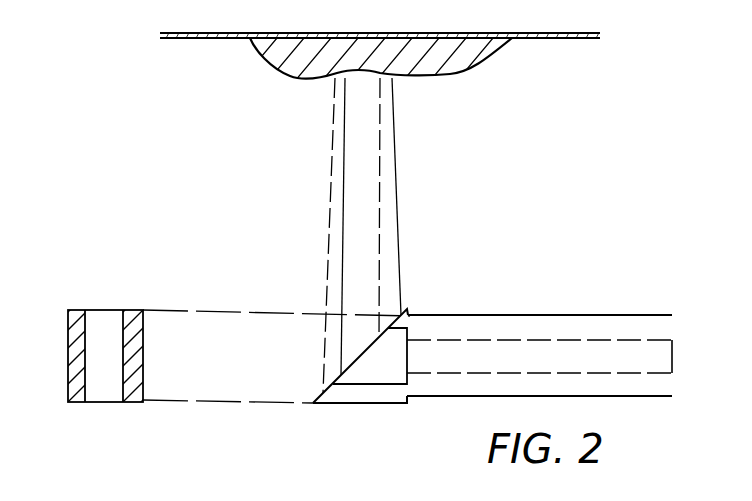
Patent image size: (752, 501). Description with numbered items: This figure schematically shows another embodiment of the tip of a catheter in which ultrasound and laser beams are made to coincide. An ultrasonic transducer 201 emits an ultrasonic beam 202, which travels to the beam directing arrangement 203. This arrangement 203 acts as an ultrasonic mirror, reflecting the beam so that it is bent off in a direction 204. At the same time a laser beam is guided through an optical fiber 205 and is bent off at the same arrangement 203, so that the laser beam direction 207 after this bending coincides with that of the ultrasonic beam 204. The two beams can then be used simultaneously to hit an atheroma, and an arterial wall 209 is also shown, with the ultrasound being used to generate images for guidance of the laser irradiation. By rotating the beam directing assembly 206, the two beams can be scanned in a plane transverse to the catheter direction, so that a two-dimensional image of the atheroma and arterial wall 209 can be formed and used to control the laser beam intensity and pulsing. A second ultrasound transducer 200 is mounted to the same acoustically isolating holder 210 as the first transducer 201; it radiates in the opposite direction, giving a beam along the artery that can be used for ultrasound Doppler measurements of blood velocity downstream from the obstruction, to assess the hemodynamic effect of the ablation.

The second ultrasound transducer 200 is at (104, 357).
The ultrasonic transducer 201 is at (138, 310).
The ultrasonic beam 202 is at (287, 312).
The beam directing arrangement 203 is at (362, 385).
The ultrasonic beam direction 204 is at (399, 255).
The optical fiber 205 is at (642, 373).
The beam directing assembly 206 is at (595, 315).
The laser beam direction 207 is at (375, 147).
The arterial wall 209 is at (578, 33).
The acoustically isolating holder 210 is at (107, 403).